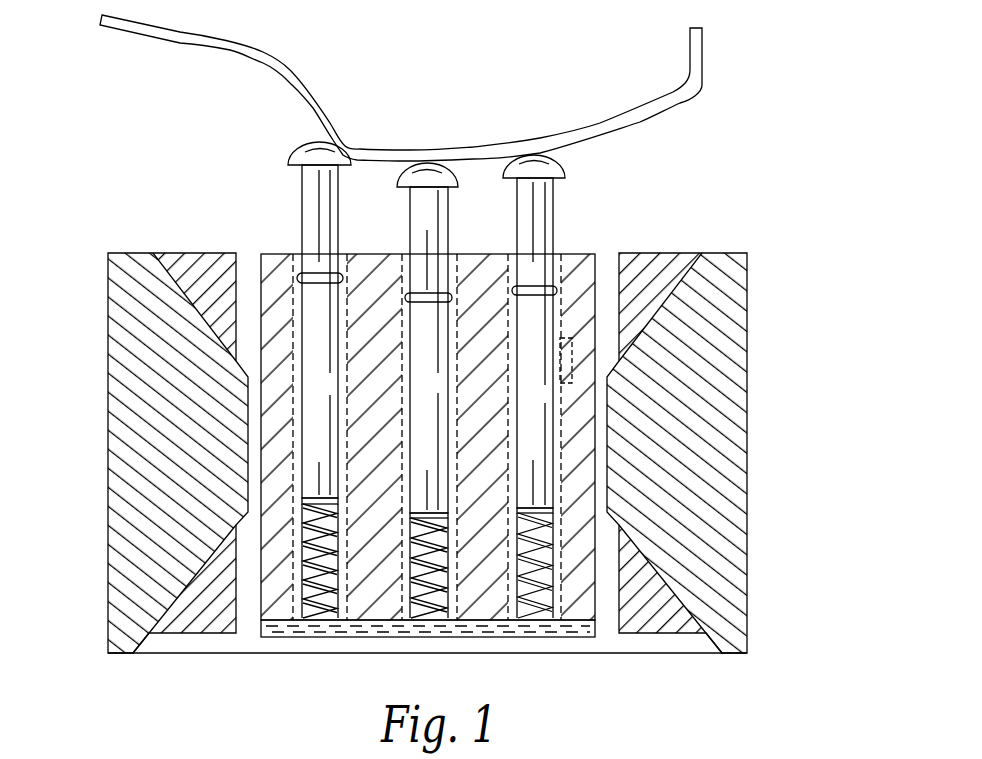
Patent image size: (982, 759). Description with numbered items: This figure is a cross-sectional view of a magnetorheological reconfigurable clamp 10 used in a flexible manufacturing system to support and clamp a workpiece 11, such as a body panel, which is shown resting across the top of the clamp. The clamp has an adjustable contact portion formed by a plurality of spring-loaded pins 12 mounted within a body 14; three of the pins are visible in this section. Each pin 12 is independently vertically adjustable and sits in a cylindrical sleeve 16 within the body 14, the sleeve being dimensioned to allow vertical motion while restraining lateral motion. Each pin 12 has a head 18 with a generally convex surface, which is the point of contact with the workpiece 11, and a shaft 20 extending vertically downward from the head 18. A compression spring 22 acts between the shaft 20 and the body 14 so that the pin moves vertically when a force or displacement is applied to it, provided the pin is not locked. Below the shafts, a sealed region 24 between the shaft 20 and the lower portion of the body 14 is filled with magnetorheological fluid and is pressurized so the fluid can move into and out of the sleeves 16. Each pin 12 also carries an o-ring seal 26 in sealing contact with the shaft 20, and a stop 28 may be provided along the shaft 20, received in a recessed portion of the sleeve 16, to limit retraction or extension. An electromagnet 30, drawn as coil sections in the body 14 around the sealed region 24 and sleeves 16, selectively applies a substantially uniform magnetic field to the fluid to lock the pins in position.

The magnetorheological reconfigurable clamp 10 is at (792, 421).
The workpiece 11 is at (493, 145).
The spring-loaded pin 12 is at (456, 305).
The body 14 is at (260, 423).
The sleeve 16 is at (560, 463).
The head 18 is at (296, 150).
The shaft 20 is at (311, 218).
The compression spring 22 is at (321, 612).
The sealed region 24 is at (510, 637).
The o-ring seal 26 is at (528, 285).
The stop 28 is at (566, 364).
The electromagnet 30 is at (205, 278).